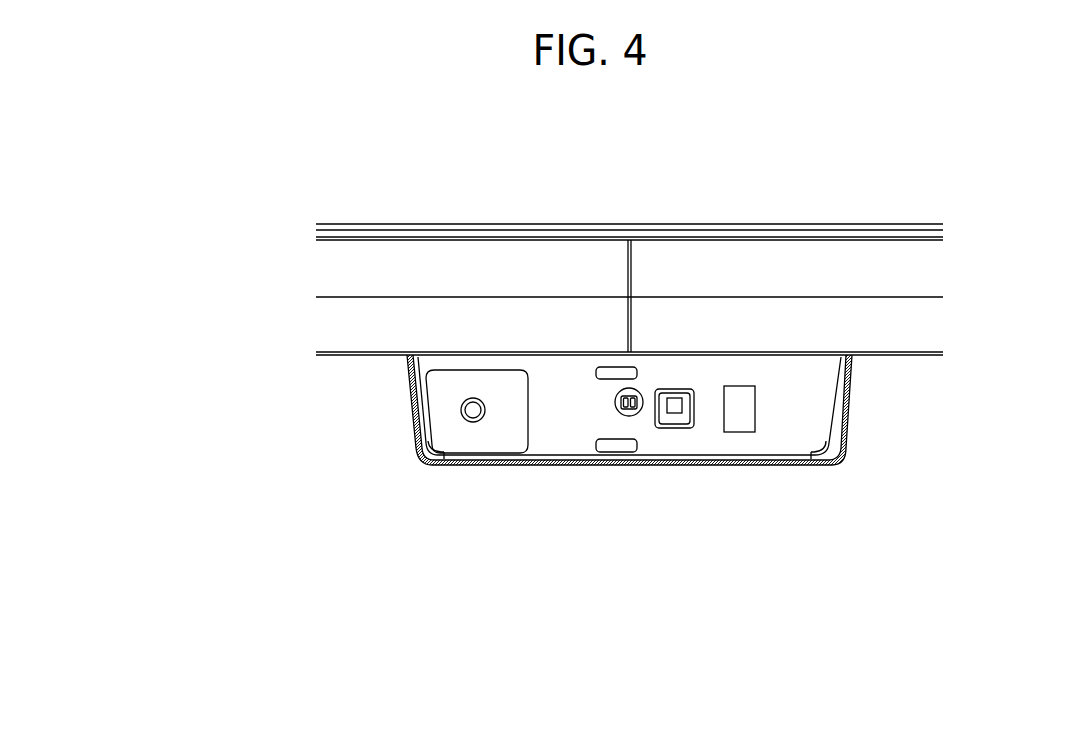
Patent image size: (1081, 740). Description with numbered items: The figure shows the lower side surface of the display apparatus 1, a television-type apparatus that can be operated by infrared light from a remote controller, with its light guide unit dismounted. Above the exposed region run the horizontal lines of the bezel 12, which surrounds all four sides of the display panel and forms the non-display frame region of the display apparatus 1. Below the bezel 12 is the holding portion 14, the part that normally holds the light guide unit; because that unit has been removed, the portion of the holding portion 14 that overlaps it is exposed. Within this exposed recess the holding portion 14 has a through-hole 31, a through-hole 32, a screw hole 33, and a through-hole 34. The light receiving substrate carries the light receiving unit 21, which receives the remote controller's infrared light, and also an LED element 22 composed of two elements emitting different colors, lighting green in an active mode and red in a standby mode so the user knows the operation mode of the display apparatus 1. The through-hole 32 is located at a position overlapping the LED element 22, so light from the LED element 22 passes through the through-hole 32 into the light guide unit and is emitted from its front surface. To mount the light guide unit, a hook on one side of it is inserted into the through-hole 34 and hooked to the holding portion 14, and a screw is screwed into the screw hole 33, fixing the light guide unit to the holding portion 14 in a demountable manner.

The display apparatus 1 is at (780, 151).
The bezel 12 is at (915, 265).
The holding portion 14 is at (812, 403).
The light receiving unit 21 is at (673, 413).
The LED element 22 is at (642, 393).
The through-hole 31 is at (660, 427).
The through-hole 32 is at (617, 393).
The screw hole 33 is at (478, 421).
The through-hole 34 is at (743, 432).